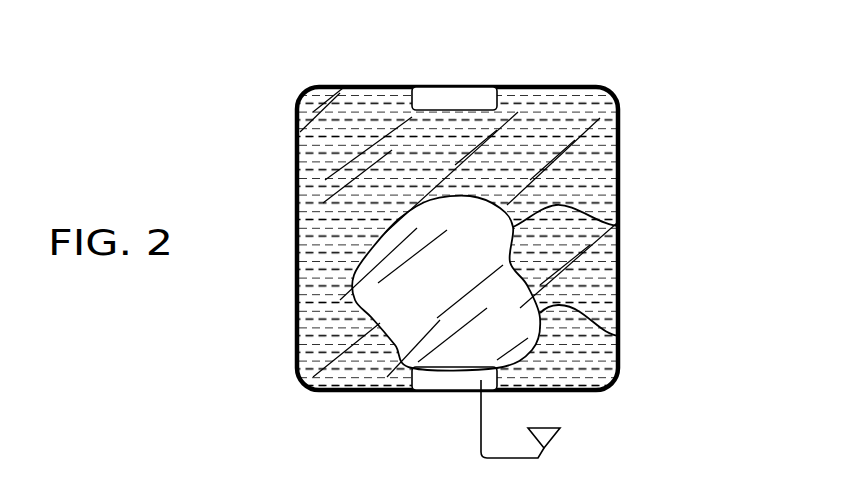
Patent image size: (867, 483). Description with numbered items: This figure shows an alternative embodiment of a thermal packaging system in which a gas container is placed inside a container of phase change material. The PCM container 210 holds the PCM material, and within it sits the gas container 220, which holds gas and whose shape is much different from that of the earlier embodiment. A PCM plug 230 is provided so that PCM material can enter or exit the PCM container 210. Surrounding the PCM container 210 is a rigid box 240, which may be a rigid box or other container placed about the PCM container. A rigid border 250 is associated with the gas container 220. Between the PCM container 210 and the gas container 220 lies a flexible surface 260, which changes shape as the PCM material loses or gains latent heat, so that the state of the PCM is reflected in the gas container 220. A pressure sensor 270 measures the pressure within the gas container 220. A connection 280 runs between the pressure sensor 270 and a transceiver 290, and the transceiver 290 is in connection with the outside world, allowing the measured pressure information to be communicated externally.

The PCM container 210 is at (325, 293).
The gas container 220 is at (620, 336).
The PCM plug 230 is at (427, 96).
The rigid box 240 is at (297, 183).
The rigid border 250 is at (453, 372).
The flexible surface 260 is at (620, 226).
The pressure sensor 270 is at (428, 385).
The connection 280 is at (481, 440).
The transceiver 290 is at (553, 438).